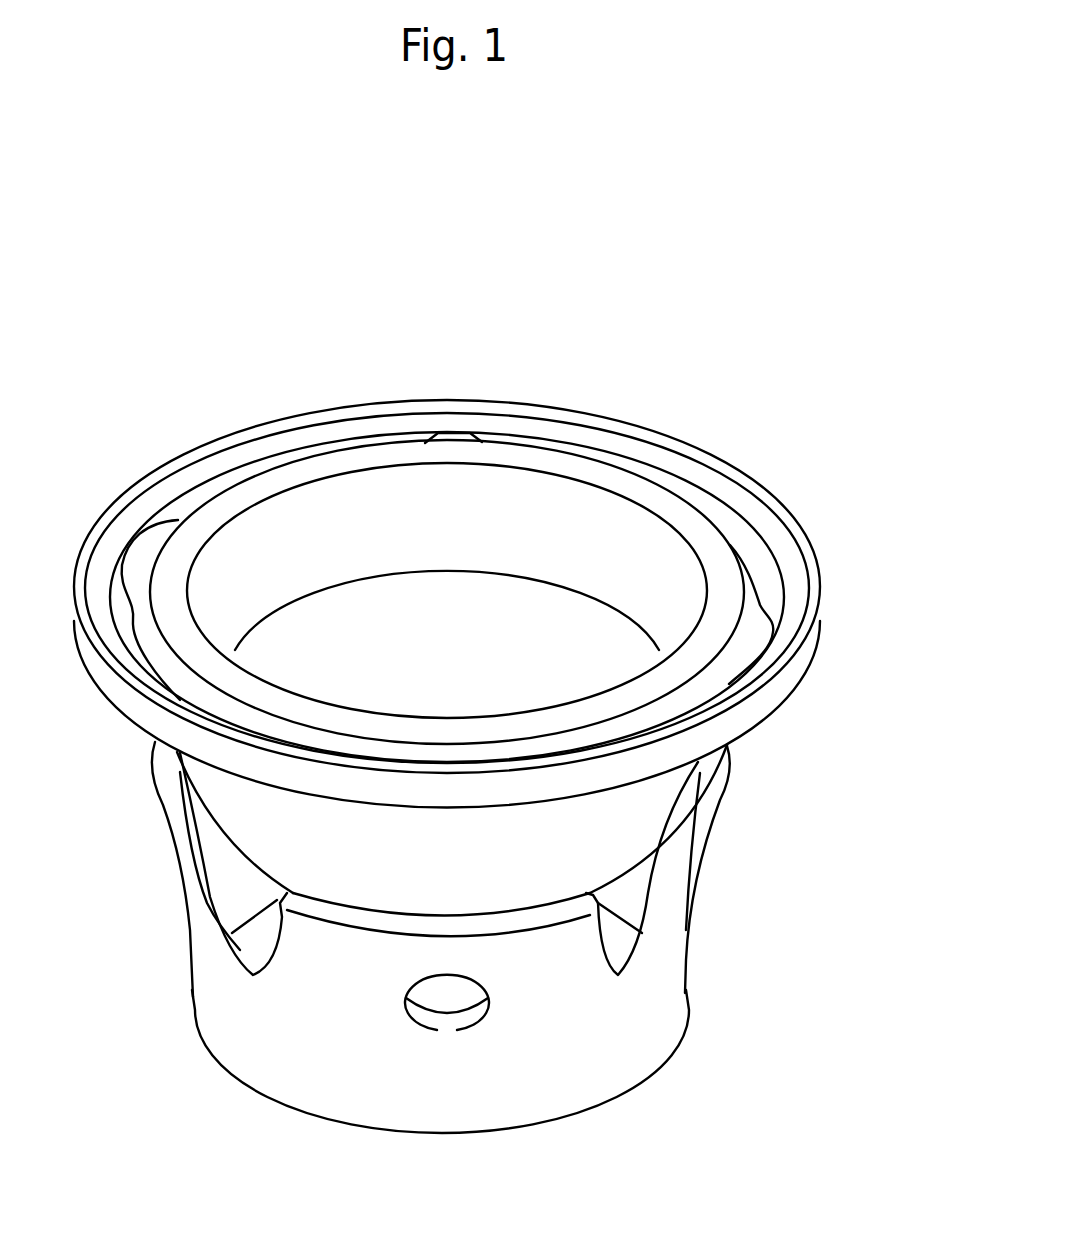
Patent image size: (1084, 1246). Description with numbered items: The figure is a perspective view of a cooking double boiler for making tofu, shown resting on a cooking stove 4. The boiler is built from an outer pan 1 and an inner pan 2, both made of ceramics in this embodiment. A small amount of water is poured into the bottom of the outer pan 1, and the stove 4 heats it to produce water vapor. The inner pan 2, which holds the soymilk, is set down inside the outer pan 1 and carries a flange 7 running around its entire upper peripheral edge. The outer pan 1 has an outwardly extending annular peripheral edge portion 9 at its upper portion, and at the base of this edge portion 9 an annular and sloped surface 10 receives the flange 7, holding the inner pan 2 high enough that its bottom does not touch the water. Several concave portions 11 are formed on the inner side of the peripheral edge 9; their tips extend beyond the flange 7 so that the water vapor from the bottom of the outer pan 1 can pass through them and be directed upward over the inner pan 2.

The outer pan 1 is at (635, 812).
The inner pan 2 is at (640, 543).
The cooking stove 4 is at (607, 1052).
The flange 7 is at (717, 557).
The peripheral edge portion 9 is at (760, 565).
The annular and sloped surface 10 is at (616, 457).
The concave portions 11 is at (455, 432).